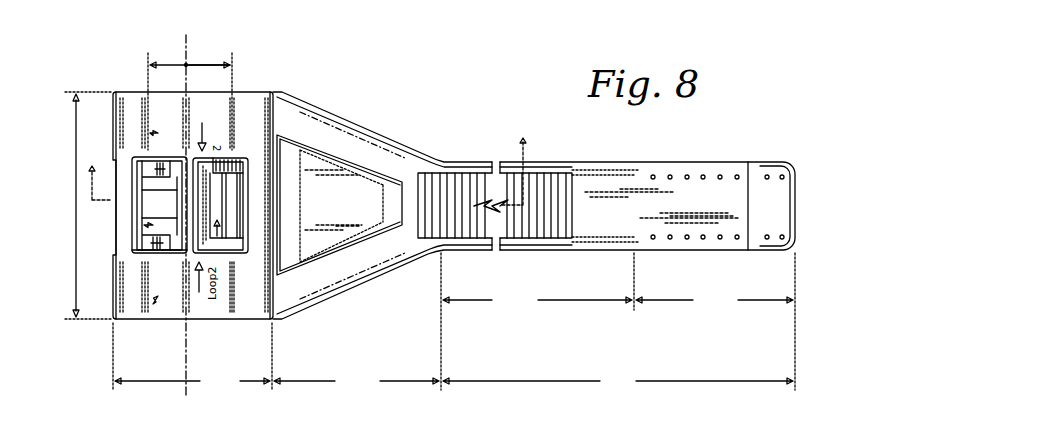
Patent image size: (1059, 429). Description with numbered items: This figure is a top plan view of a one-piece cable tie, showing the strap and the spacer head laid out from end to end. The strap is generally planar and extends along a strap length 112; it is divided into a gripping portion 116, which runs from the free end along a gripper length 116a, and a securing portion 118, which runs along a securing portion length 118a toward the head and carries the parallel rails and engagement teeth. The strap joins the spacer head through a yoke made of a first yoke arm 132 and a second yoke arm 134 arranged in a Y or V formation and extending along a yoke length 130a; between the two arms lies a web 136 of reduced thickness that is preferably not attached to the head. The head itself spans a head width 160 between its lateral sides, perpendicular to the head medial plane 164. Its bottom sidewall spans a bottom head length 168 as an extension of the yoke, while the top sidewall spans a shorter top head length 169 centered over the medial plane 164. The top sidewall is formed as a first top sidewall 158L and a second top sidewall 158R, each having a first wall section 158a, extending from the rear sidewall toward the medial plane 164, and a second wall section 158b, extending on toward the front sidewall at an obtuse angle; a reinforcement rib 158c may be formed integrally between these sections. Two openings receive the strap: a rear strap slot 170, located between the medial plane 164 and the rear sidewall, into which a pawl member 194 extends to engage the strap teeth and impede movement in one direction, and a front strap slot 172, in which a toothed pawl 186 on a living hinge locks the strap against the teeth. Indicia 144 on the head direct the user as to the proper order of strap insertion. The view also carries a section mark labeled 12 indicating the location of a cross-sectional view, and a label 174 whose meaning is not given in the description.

The strap length 112 is at (618, 381).
The gripping portion 116 is at (732, 146).
The gripper length 116a is at (714, 300).
The securing portion 118 is at (500, 142).
The securing portion length 118a is at (537, 300).
The yoke length 130a is at (356, 381).
The first yoke arm 132 is at (355, 265).
The second yoke arm 134 is at (318, 135).
The web 136 is at (353, 190).
The indicia 144 is at (202, 122).
The first wall section 158a is at (160, 118).
The second wall section 158b is at (220, 128).
The second top sidewall 158R is at (152, 133).
The first top sidewall 158L is at (153, 304).
The reinforcement rib 158c is at (178, 253).
The head width 160 is at (87, 205).
The head medial plane 164 is at (181, 60).
The bottom head length 168 is at (192, 381).
The top head length 169 is at (196, 63).
The rear strap slot 170 is at (146, 225).
The front strap slot 172 is at (218, 238).
The stitching strips 174 is at (162, 165).
The toothed pawl 186 is at (233, 215).
The pawl member 194 is at (160, 203).
The section line FIG. 12 is at (309, 164).